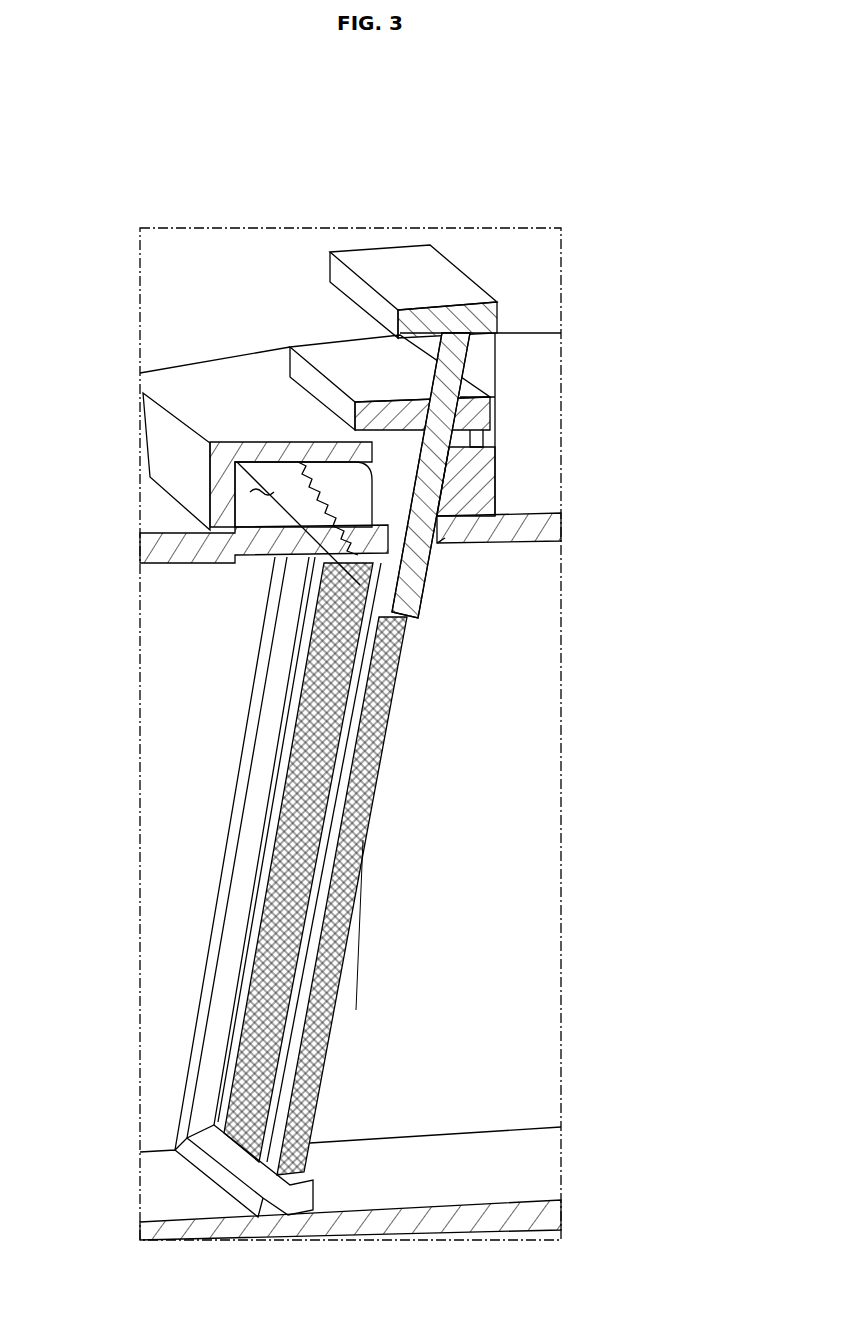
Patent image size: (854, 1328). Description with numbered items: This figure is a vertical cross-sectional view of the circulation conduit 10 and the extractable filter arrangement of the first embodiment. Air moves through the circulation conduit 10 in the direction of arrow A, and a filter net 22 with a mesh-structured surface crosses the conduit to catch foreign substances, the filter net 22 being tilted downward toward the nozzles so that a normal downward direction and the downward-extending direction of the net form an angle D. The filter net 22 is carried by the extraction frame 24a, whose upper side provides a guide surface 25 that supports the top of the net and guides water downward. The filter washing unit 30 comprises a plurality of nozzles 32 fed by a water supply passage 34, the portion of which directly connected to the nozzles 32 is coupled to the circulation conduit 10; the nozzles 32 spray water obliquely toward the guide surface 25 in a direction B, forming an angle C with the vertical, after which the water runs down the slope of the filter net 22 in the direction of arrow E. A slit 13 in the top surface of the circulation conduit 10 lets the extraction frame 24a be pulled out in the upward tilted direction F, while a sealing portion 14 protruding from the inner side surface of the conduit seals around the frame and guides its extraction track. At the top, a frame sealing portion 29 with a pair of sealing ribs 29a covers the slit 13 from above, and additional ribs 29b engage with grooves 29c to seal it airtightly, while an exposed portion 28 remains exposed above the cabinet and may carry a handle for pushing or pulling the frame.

The circulation conduit 10 is at (530, 505).
The slit 13 is at (445, 538).
The sealing portion 14 is at (242, 1178).
The filter net 22 is at (307, 838).
The extraction frame 24a is at (333, 776).
The guide surface 25 is at (337, 562).
The exposed portion 28 is at (408, 263).
The frame sealing portion 29 is at (566, 444).
The sealing ribs 29a is at (473, 396).
The additional ribs 29b is at (493, 434).
The grooves 29c is at (493, 473).
The filter washing unit 30 is at (310, 157).
The nozzles 32 is at (298, 462).
The water supply passage 34 is at (211, 442).
The arrow indicating airflow direction A is at (206, 867).
The water spraying direction B is at (388, 575).
The spray angle C is at (368, 595).
The filter net tilt angle D is at (347, 953).
The water running direction E is at (316, 991).
The extraction direction F is at (503, 323).